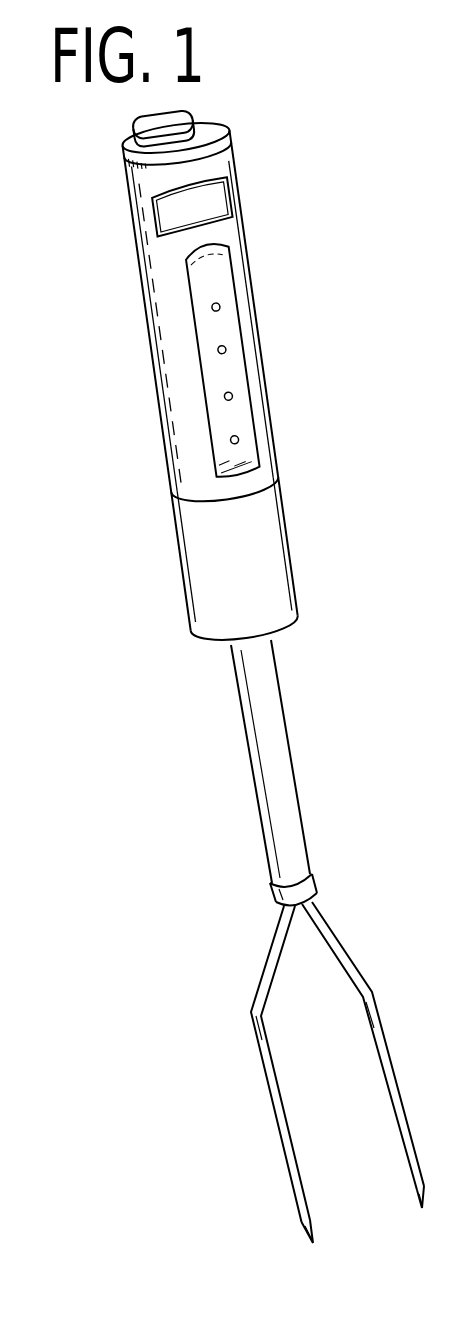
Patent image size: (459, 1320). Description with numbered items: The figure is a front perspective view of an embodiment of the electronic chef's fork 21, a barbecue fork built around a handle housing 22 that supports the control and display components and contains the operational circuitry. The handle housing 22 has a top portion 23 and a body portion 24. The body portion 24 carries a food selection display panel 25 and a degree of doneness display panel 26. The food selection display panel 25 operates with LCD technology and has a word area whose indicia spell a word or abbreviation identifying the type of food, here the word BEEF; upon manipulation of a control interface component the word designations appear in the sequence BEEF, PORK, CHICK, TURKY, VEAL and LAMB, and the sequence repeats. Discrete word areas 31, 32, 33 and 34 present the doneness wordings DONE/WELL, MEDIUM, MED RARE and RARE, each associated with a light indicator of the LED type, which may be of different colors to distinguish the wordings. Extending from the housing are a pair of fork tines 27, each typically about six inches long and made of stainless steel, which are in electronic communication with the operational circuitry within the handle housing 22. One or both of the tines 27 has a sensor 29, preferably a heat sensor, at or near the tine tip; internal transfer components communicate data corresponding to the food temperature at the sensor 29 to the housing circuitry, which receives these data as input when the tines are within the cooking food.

The electronic chef's fork 21 is at (131, 520).
The handle housing 22 is at (199, 305).
The top portion 23 is at (164, 129).
The body portion 24 is at (235, 561).
The food selection display panel 25 is at (192, 206).
The degree of doneness display panel 26 is at (222, 360).
The fork tines 27 is at (328, 1086).
The sensor 29 is at (307, 1234).
The discrete word area 31 is at (215, 307).
The discrete word area 32 is at (221, 349).
The discrete word area 33 is at (228, 396).
The discrete word area 34 is at (234, 439).